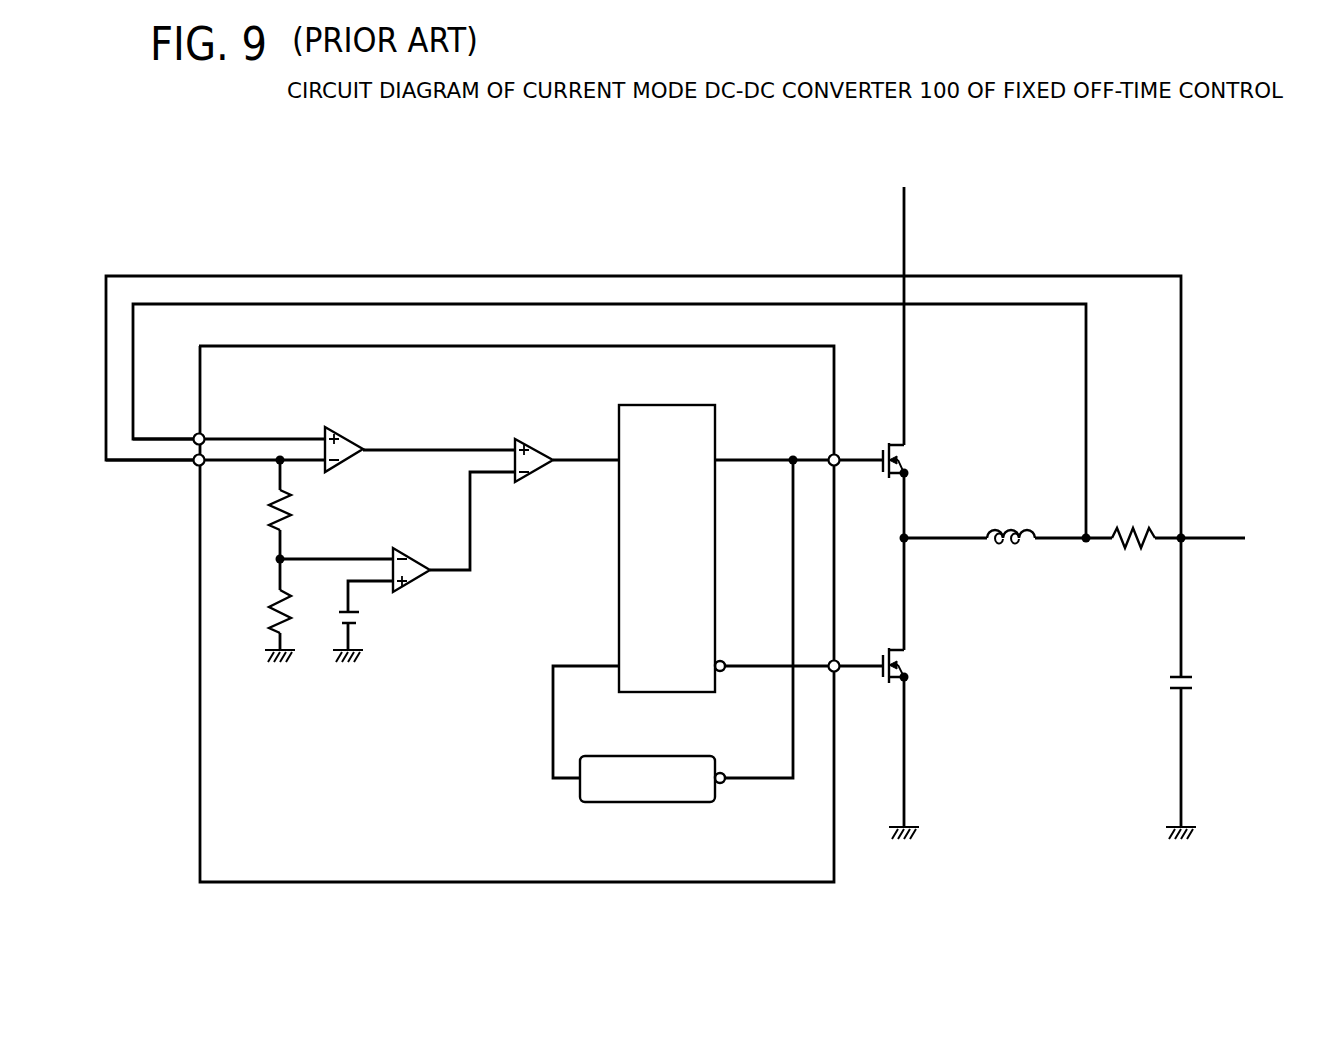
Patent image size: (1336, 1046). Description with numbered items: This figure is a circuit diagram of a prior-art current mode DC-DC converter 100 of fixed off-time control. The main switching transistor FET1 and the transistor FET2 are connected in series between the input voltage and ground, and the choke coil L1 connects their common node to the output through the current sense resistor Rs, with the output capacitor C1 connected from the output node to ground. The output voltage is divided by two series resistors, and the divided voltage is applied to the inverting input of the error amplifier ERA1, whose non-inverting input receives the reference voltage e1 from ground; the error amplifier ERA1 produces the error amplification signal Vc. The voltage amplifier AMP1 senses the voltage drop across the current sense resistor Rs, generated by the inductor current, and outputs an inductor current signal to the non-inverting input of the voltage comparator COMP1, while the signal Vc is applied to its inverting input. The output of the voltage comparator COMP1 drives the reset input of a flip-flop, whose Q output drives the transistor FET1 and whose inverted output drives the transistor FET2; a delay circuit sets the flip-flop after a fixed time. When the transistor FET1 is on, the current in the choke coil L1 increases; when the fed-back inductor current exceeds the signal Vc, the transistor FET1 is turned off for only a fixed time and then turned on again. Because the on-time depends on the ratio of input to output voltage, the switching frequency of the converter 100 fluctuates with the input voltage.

The current mode DC-DC converter 100 is at (698, 188).
The voltage amplifier AMP1 is at (323, 436).
The voltage comparator COMP1 is at (514, 446).
The error amplifier ERA1 is at (395, 556).
The reference voltage e1 is at (367, 622).
The main switching transistor FET1 is at (925, 460).
The transistor FET2 is at (925, 665).
The choke coil L1 is at (1011, 520).
The current sense resistor Rs is at (1133, 523).
The output capacitor C1 is at (1165, 682).